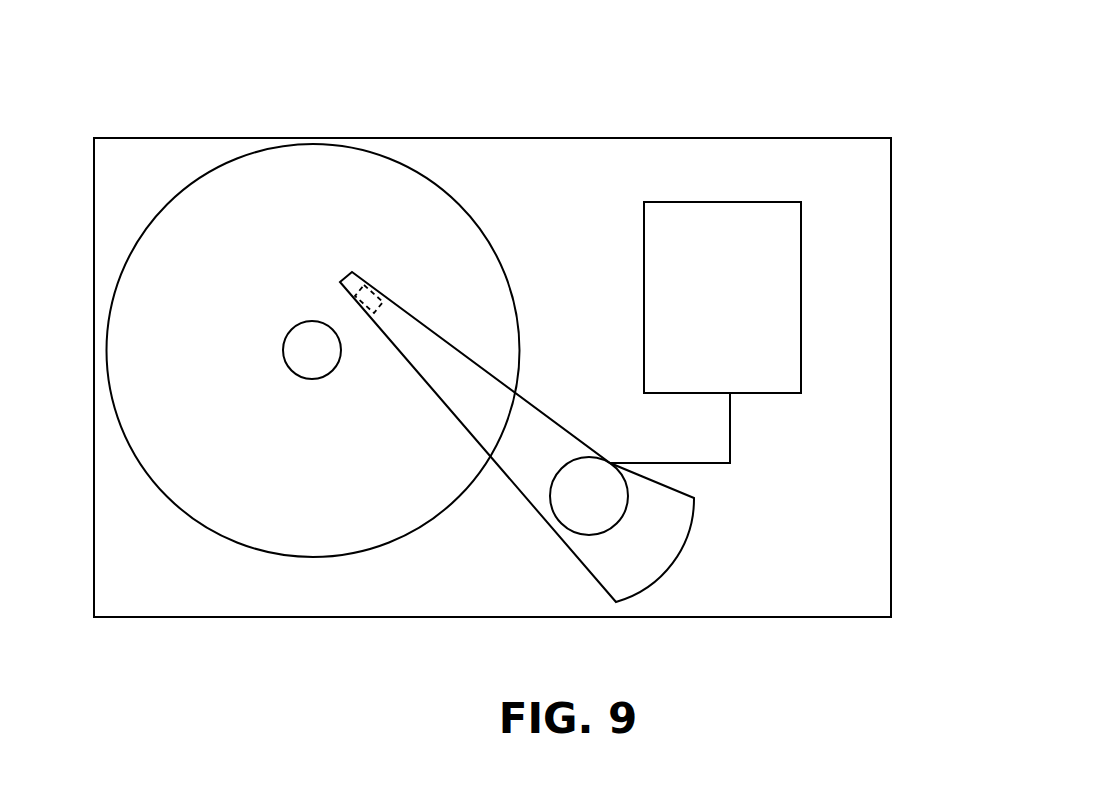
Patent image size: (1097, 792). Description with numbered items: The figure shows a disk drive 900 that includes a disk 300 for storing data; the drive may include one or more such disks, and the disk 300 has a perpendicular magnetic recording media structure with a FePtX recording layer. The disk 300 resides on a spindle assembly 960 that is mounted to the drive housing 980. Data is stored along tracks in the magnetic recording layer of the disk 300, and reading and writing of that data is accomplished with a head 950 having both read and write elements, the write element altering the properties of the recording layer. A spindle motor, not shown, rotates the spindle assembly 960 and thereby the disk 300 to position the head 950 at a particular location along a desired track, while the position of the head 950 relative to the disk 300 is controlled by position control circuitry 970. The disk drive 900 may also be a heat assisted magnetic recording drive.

The disk drive 900 is at (857, 68).
The drive housing 980 is at (578, 138).
The disk 300 is at (215, 530).
The spindle assembly 960 is at (297, 361).
The position control circuitry 970 is at (702, 338).
The head 950 is at (363, 282).